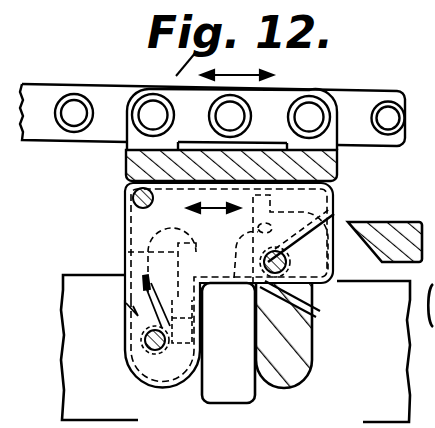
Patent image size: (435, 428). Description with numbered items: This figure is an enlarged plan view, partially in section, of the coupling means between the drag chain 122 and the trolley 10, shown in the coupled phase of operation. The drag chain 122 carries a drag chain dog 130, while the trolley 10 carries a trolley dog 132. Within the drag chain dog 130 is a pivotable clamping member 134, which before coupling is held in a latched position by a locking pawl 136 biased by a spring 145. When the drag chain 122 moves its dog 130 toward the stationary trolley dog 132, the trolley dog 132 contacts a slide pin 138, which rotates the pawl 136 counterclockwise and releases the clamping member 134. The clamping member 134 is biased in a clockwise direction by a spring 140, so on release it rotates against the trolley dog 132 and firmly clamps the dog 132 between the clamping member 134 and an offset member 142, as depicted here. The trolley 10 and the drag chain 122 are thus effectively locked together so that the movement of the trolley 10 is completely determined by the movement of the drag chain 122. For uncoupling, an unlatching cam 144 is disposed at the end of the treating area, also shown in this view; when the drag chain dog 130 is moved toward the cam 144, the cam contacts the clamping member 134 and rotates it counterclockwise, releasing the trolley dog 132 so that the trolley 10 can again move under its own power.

The trolley 10 is at (110, 341).
The drag chain 122 is at (368, 102).
The drag chain dog 130 is at (138, 213).
The trolley dog 132 is at (235, 388).
The pivotable clamping member 134 is at (292, 350).
The locking pawl 136 is at (130, 250).
The slide pin 138 is at (194, 313).
The spring 140 is at (328, 250).
The offset member 142 is at (175, 368).
The unlatching cam 144 is at (403, 233).
The spring 145 is at (123, 306).